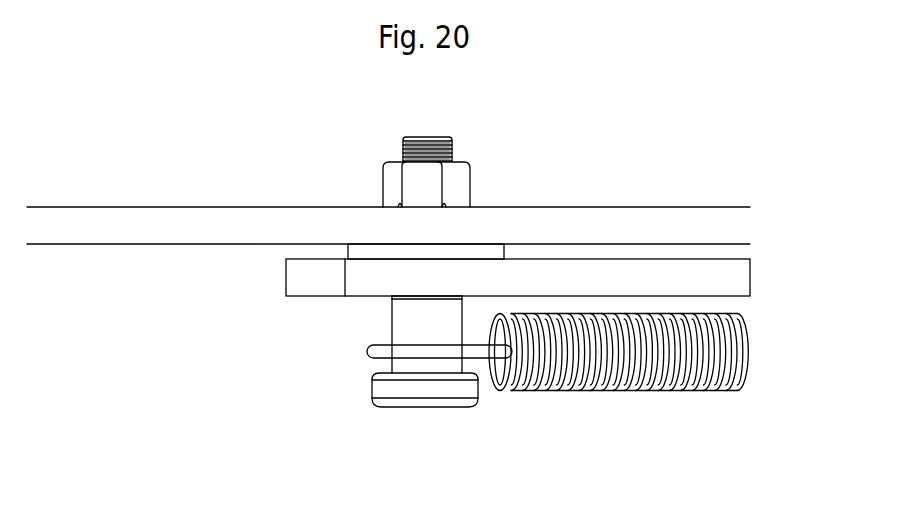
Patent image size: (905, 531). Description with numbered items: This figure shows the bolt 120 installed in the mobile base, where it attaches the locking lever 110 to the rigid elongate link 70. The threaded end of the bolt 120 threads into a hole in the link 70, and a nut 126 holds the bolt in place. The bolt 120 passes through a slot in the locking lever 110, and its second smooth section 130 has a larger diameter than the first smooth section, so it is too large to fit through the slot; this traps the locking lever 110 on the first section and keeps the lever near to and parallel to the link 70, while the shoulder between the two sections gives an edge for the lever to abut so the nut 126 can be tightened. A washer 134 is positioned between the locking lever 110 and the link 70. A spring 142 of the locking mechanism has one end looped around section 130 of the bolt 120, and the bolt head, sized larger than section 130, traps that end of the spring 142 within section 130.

The link 70 is at (137, 225).
The nut 126 is at (408, 183).
The washer 134 is at (485, 253).
The locking lever 110 is at (688, 285).
The second smooth section 130 is at (408, 329).
The bolt 120 is at (395, 427).
The spring 142 is at (592, 365).